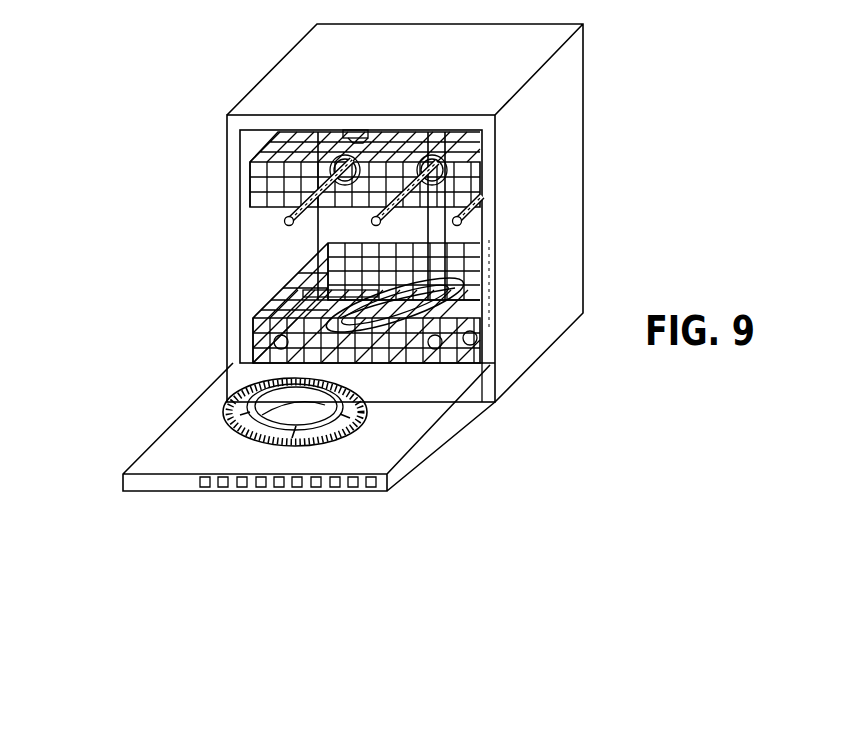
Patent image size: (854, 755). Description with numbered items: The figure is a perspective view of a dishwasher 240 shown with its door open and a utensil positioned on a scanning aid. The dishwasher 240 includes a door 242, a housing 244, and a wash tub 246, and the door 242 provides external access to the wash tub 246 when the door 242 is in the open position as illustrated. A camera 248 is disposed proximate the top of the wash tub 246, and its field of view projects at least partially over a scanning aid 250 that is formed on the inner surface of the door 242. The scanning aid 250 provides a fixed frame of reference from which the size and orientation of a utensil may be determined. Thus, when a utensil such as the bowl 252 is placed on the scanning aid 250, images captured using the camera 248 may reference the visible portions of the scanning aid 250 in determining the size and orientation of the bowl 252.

The dishwasher 240 is at (214, 58).
The door 242 is at (123, 488).
The housing 244 is at (228, 128).
The wash tub 246 is at (243, 272).
The camera 248 is at (355, 130).
The scanning aid 250 is at (250, 440).
The bowl 252 is at (292, 438).